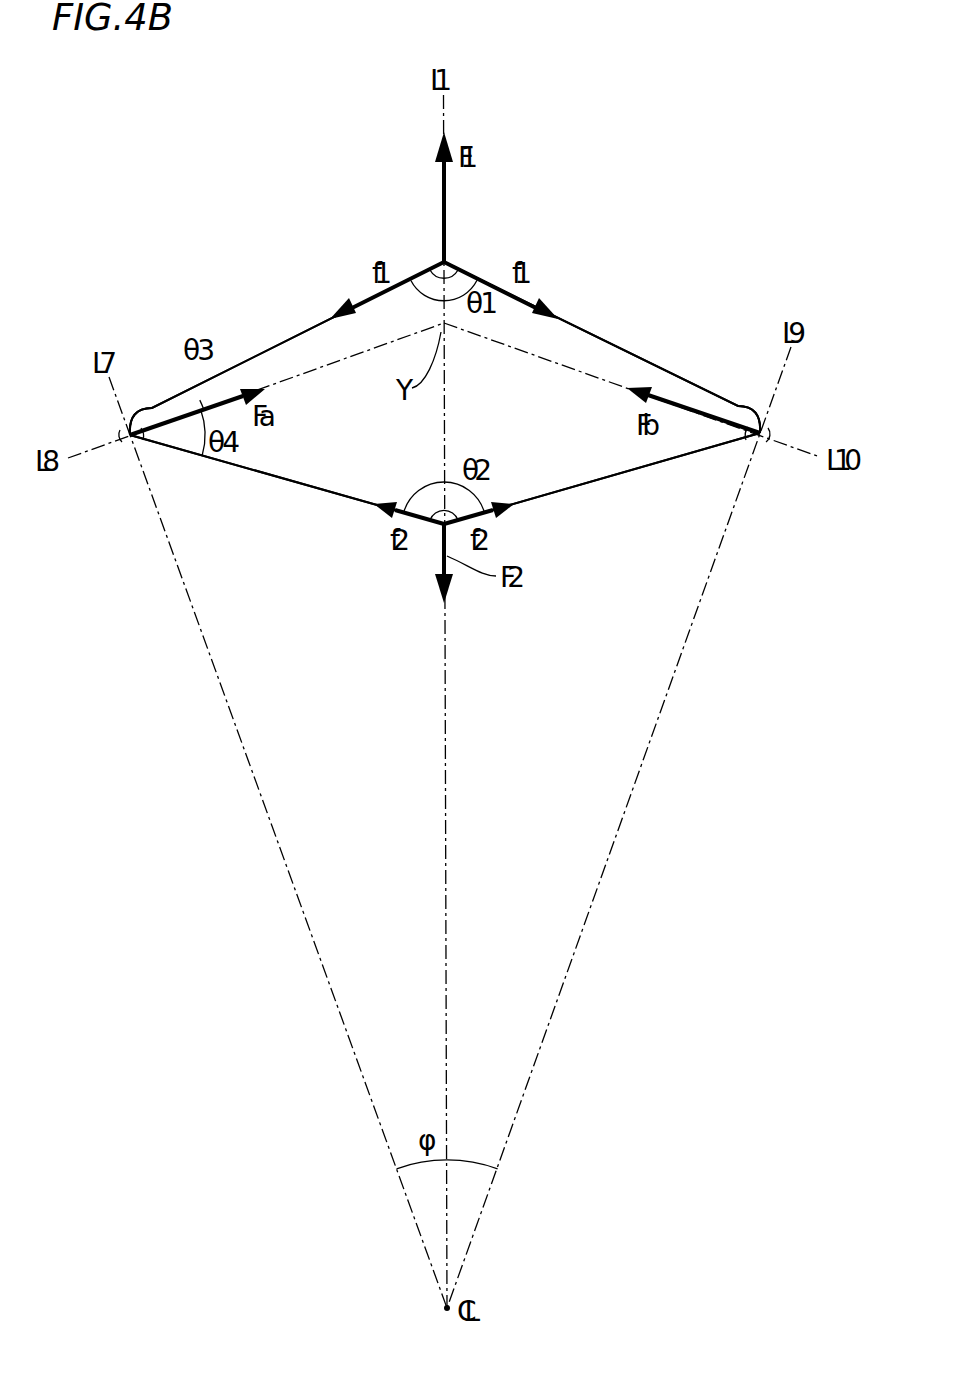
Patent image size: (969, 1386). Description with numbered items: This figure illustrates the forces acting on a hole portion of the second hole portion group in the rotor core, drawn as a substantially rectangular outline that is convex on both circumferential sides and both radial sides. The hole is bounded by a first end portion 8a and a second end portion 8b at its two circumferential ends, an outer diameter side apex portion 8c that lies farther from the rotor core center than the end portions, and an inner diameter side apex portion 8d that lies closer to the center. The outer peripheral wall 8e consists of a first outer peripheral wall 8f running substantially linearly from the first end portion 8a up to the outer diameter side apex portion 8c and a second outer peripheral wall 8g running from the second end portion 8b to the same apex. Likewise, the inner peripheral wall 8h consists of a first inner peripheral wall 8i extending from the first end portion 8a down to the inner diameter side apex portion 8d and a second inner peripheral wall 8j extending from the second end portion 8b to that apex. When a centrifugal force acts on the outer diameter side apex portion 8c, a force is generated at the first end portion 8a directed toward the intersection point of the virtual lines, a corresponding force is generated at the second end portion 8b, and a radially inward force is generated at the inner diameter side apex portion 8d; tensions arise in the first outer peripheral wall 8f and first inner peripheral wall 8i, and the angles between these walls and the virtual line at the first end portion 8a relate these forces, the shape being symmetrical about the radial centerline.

The first end portion 8a is at (135, 452).
The second end portion 8b is at (753, 420).
The outer diameter side apex portion 8c is at (462, 277).
The inner diameter side apex portion 8d is at (446, 512).
The outer peripheral wall 8e is at (445, 348).
The first outer peripheral wall 8f is at (299, 346).
The second outer peripheral wall 8g is at (618, 350).
The inner peripheral wall 8h is at (445, 478).
The first inner peripheral wall 8i is at (328, 492).
The second inner peripheral wall 8j is at (613, 465).